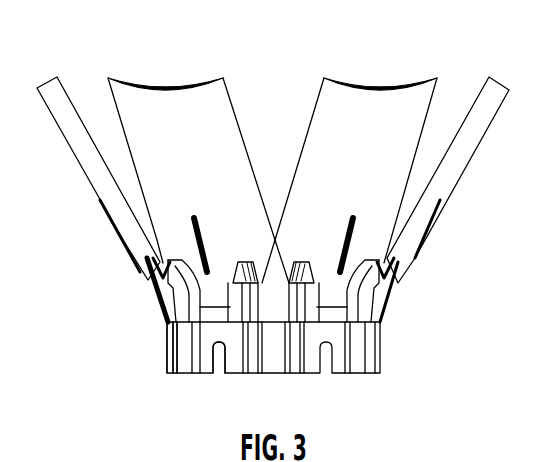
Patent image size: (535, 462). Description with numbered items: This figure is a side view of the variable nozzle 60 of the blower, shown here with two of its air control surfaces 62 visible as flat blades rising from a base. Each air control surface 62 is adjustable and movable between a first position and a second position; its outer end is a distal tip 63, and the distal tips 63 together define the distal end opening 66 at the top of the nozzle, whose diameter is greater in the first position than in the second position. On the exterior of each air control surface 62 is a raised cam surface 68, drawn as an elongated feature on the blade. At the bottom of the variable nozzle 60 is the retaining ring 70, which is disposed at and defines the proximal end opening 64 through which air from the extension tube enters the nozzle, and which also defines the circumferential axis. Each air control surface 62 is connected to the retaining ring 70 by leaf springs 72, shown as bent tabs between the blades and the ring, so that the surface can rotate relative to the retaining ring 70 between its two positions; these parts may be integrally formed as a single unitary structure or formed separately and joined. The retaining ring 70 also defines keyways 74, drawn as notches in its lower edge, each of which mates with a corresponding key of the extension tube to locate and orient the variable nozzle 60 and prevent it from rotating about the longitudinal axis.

The variable nozzle 60 is at (269, 224).
The air control surface 62 is at (295, 156).
The distal tip 63 is at (163, 86).
The proximal end opening 64 is at (255, 375).
The distal end opening 66 is at (289, 64).
The raised cam surface 68 is at (352, 248).
The retaining ring 70 is at (183, 349).
The leaf spring 72 is at (298, 308).
The keyway 74 is at (220, 359).